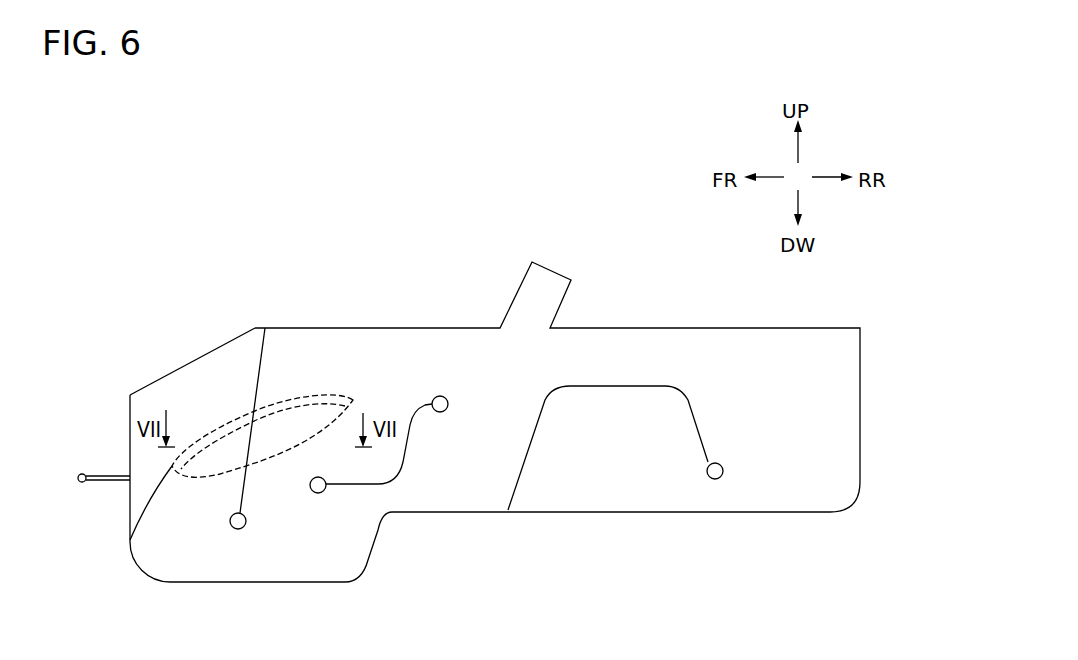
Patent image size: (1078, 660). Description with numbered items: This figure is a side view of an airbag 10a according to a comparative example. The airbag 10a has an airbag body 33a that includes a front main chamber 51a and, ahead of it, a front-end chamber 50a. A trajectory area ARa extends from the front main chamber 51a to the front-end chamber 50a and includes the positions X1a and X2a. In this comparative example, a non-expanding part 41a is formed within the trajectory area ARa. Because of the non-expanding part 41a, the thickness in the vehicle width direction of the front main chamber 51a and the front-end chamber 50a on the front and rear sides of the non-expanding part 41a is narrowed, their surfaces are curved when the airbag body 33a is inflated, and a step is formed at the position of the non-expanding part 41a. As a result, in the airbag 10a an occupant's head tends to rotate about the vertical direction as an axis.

The airbag 10a is at (638, 247).
The front-end chamber 50a is at (203, 373).
The non-expanding part 41a is at (263, 348).
The position X1a is at (353, 400).
The front main chamber 51a is at (372, 347).
The airbag body 33a is at (760, 327).
The trajectory area ARa is at (181, 478).
The position X2a is at (172, 466).